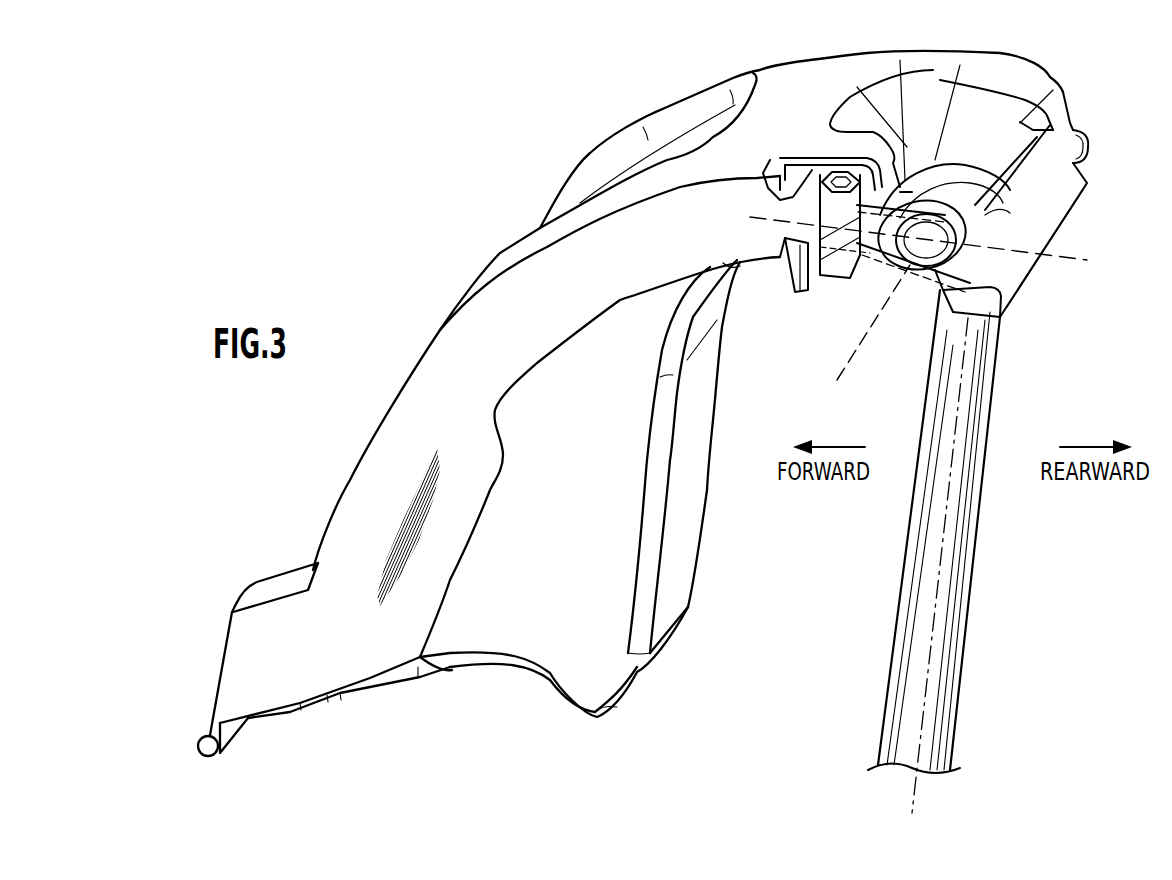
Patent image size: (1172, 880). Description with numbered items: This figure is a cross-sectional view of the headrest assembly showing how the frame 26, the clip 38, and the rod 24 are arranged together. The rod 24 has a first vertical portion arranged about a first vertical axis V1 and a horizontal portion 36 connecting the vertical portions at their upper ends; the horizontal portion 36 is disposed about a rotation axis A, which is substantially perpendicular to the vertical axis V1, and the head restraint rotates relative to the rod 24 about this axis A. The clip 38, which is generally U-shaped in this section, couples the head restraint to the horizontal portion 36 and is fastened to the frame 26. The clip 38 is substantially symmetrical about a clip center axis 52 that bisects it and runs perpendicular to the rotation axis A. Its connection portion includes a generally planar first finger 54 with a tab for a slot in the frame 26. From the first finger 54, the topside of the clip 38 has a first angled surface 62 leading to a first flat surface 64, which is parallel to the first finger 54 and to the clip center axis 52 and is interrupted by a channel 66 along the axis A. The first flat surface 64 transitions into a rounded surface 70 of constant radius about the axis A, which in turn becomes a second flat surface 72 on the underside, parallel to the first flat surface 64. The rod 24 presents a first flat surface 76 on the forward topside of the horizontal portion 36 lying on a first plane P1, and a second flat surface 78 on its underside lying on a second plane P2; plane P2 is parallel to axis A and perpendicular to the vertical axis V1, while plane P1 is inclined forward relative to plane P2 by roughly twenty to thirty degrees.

The frame 26 is at (783, 67).
The rod 24 is at (990, 545).
The horizontal portion 36 is at (1043, 78).
The clip 38 is at (905, 186).
The clip center axis 52 is at (1063, 257).
The first finger 54 is at (863, 193).
The first angled surface 62 is at (930, 180).
The first flat surface 64 is at (1078, 165).
The channel 66 is at (975, 228).
The rounded surface 70 is at (1000, 215).
The second flat surface 72 is at (916, 273).
The first flat surface 76 is at (868, 275).
The second flat surface 78 is at (928, 290).
The first plane P1 is at (1040, 180).
The second plane P2 is at (1033, 300).
The rotation axis A is at (868, 330).
The first vertical axis V1 is at (928, 660).